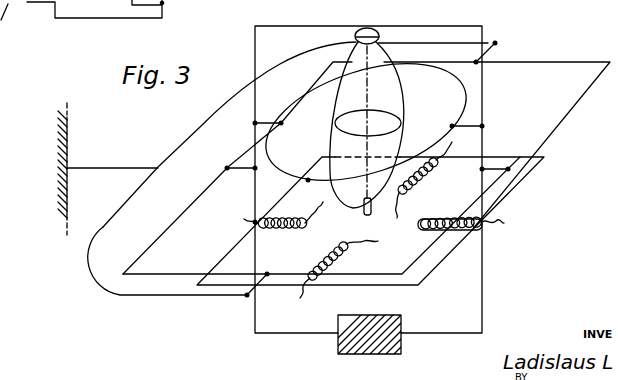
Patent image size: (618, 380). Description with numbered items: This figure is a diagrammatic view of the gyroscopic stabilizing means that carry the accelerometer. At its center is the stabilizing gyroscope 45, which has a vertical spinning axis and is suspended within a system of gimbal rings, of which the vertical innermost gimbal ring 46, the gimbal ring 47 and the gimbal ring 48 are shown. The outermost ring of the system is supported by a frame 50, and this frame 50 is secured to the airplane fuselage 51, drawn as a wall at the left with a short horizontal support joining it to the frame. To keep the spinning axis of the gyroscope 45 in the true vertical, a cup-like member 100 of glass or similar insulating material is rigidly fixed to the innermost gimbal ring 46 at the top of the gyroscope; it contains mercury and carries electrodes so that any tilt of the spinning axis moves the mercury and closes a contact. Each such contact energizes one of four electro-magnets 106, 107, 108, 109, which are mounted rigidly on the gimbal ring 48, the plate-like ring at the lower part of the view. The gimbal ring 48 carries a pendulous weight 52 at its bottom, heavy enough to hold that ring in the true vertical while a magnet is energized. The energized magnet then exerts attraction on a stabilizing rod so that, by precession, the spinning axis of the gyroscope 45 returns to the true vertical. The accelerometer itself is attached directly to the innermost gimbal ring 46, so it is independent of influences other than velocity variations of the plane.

The stabilizing gyroscope 45 is at (441, 26).
The innermost gimbal ring 46 is at (401, 102).
The gimbal ring 47 is at (437, 70).
The gimbal ring 48 is at (578, 101).
The frame 50 is at (121, 296).
The airplane fuselage 51 is at (64, 164).
The pendulous weight 52 is at (368, 353).
The cup-like member 100 is at (371, 30).
The electro-magnet 106 is at (341, 254).
The electro-magnet 107 is at (283, 231).
The electro-magnet 108 is at (422, 178).
The electro-magnet 109 is at (432, 221).